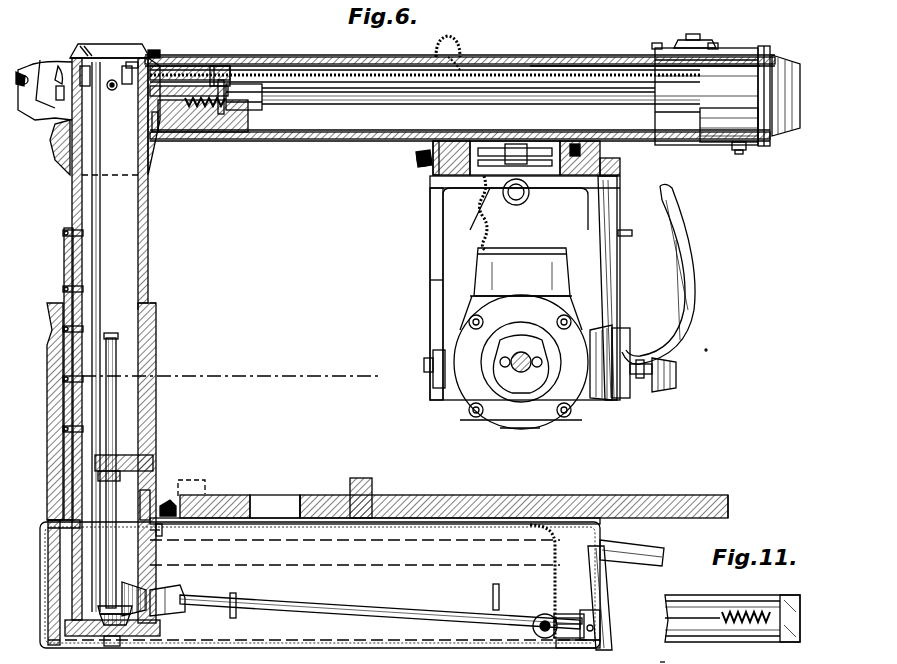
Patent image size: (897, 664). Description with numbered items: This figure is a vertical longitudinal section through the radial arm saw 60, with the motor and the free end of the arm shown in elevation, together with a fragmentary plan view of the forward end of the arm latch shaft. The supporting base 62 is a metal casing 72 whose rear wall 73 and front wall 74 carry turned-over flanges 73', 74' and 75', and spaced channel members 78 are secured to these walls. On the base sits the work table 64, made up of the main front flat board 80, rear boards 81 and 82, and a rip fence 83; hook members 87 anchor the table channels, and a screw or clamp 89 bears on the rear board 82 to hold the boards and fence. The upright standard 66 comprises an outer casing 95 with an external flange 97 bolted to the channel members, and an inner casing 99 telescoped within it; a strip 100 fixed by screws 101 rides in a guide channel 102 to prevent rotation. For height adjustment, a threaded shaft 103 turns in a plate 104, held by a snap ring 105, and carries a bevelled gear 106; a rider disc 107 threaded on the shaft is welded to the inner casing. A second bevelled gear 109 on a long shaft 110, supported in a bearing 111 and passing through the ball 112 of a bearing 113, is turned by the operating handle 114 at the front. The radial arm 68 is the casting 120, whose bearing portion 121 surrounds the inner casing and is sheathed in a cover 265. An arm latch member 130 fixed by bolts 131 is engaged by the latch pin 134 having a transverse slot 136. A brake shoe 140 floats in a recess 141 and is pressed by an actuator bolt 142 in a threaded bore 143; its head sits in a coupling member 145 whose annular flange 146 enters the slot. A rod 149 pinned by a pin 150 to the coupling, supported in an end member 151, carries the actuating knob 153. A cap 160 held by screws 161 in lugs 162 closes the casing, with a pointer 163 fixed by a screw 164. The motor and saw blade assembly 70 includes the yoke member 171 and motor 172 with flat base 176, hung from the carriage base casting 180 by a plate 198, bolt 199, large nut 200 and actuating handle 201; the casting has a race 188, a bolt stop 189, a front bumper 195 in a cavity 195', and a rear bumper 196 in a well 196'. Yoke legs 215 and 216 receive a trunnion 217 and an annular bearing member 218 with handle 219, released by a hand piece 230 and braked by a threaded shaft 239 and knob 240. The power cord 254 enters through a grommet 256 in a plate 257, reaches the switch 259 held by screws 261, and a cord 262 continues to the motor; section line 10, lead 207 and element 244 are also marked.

In FIG. 6, the section line 10 is at (47, 376).
In FIG. 6, the radial arm saw 60 is at (708, 350).
In FIG. 6, the supporting base 62 is at (598, 592).
In FIG. 6, the work table 64 is at (736, 496).
In FIG. 6, the upright standard 66 is at (160, 322).
In FIG. 6, the radial arm 68 is at (290, 56).
In FIG. 6, the motor and disc saw blade assembly 70 is at (425, 284).
In FIG. 6, the metal casing 72 is at (584, 648).
In FIG. 6, the rear wall 73 is at (310, 585).
In FIG. 6, the horizontal flange 73' is at (51, 564).
In FIG. 6, the front wall 74 is at (604, 604).
In FIG. 6, the horizontal flange 74' is at (539, 582).
In FIG. 6, the horizontal flange 75' is at (375, 493).
In FIG. 6, the channel members 78 is at (490, 545).
In FIG. 6, the main front flat board 80 is at (680, 496).
In FIG. 6, the rear board 81 is at (334, 495).
In FIG. 6, the rear board 82 is at (280, 489).
In FIG. 6, the rip fence 83 is at (210, 480).
In FIG. 6, the hook members 87 is at (240, 594).
In FIG. 6, the screw or clamp 89 is at (168, 500).
In FIG. 6, the outer cylindrical casing 95 is at (157, 420).
In FIG. 6, the external flange 97 is at (160, 530).
In FIG. 6, the inner cylindrical casing 99 is at (135, 242).
In FIG. 6, the axially extending strip 100 is at (66, 263).
In FIG. 6, the screws 101 is at (63, 235).
In FIG. 6, the guide channel 102 is at (60, 410).
In FIG. 6, the threaded shaft 103 is at (118, 410).
In FIG. 6, the plate 104 is at (160, 630).
In FIG. 6, the snap ring 105 is at (120, 642).
In FIG. 6, the bevelled gear 106 is at (100, 612).
In FIG. 6, the rider disc 107 is at (150, 462).
In FIG. 6, the second bevelled gear 109 is at (128, 582).
In FIG. 6, the long shaft 110 is at (326, 604).
In FIG. 6, the bearing 111 is at (182, 590).
In FIG. 6, the ball 112 is at (545, 612).
In FIG. 6, the bearing 113 is at (560, 612).
In FIG. 6, the operating handle 114 is at (633, 561).
In FIG. 6, the casting 120 is at (310, 141).
In FIG. 6, the bearing portion 121 is at (158, 150).
In FIG. 6, the arm latch member 130 is at (132, 88).
In FIG. 6, the bolts 131 is at (110, 91).
In FIG. 6, the arm latch pin 134 is at (222, 66).
In FIG. 6, the transverse slot 136 is at (206, 96).
In FIG. 6, the brake shoe 140 is at (170, 120).
In FIG. 6, the recess 141 is at (58, 160).
In FIG. 6, the actuator bolt 142 is at (198, 88).
In FIG. 6, the threaded bore 143 is at (188, 70).
In FIG. 6, the coupling member 145 is at (248, 110).
In FIG. 6, the annular flange 146 is at (222, 115).
In FIG. 6, the rod 149 is at (352, 104).
In FIG. 11, the rod 149 is at (748, 595).
In FIG. 6, the pin 150 is at (255, 100).
In FIG. 6, the member 151 is at (770, 50).
In FIG. 6, the actuating knob 153 is at (784, 66).
In FIG. 6, the cap 160 is at (120, 44).
In FIG. 6, the screws 161 is at (80, 46).
In FIG. 6, the lugs 162 is at (102, 95).
In FIG. 6, the pointer 163 is at (138, 60).
In FIG. 6, the screw 164 is at (170, 36).
In FIG. 6, the yoke member 171 is at (432, 212).
In FIG. 6, the motor 172 is at (545, 310).
In FIG. 6, the flat base 176 is at (532, 428).
In FIG. 6, the base casting 180 is at (436, 172).
In FIG. 6, the race 188 is at (722, 126).
In FIG. 6, the bolt stop 189 is at (740, 154).
In FIG. 6, the front bumper 195 is at (582, 140).
In FIG. 6, the cavity 195' is at (626, 160).
In FIG. 6, the rear bumper 196 is at (405, 159).
In FIG. 6, the well 196' is at (449, 140).
In FIG. 6, the plate 198 is at (470, 230).
In FIG. 6, the bolt 199 is at (518, 146).
In FIG. 6, the large nut 200 is at (524, 196).
In FIG. 6, the actuating handle 201 is at (517, 205).
In FIG. 6, the top bar 207 is at (570, 180).
In FIG. 6, the leg 215 is at (438, 306).
In FIG. 6, the leg 216 is at (614, 270).
In FIG. 6, the trunnion 217 is at (430, 378).
In FIG. 6, the annular bearing member 218 is at (634, 350).
In FIG. 6, the handle 219 is at (680, 258).
In FIG. 6, the hand piece 230 is at (630, 230).
In FIG. 6, the threaded shaft 239 is at (646, 380).
In FIG. 6, the knob 240 is at (678, 390).
In FIG. 6, the hub 244 is at (512, 368).
In FIG. 6, the electric power cord 254 is at (50, 118).
In FIG. 6, the grommet 256 is at (58, 74).
In FIG. 6, the plate 257 is at (24, 74).
In FIG. 6, the switch 259 is at (686, 38).
In FIG. 6, the screws 261 is at (668, 30).
In FIG. 6, the power cord 262 is at (458, 46).
In FIG. 6, the cover 265 is at (528, 57).
In FIG. 11, the cover 265 is at (674, 656).